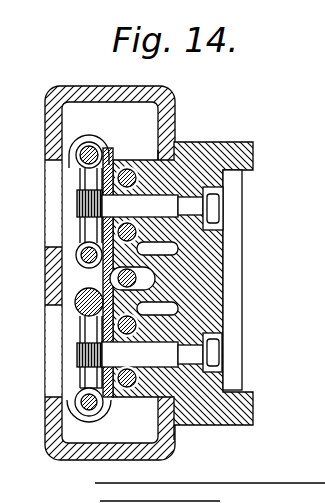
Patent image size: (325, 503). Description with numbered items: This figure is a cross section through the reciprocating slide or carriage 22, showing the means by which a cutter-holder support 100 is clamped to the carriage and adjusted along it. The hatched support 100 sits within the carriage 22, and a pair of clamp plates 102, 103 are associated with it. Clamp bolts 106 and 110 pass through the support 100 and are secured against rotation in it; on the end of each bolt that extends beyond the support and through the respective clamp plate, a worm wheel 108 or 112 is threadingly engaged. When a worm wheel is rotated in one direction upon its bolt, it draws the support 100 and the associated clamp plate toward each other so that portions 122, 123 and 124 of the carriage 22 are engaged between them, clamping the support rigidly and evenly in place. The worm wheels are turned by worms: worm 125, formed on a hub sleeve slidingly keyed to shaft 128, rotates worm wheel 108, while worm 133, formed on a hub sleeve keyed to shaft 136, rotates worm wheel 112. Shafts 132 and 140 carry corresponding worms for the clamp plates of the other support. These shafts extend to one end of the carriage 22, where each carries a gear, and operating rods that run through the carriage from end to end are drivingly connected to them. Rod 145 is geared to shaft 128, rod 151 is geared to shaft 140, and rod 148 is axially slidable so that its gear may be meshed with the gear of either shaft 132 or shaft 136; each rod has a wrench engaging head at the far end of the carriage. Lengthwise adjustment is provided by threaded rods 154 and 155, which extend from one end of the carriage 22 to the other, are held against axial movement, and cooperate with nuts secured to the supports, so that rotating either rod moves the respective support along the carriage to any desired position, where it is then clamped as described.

The reciprocating slide or carriage 22 is at (107, 89).
The support 100 is at (233, 150).
The clamp plate 102 is at (80, 232).
The clamp plate 103 is at (105, 377).
The clamp bolt 106 is at (173, 215).
The worm wheel 108 is at (80, 177).
The clamp bolt 110 is at (173, 364).
The worm wheel 112 is at (86, 327).
The portion of the carriage 122 is at (174, 436).
The portion of the carriage 123 is at (157, 278).
The portion of the carriage 124 is at (162, 146).
The worm 125 is at (86, 143).
The shaft 128 is at (107, 150).
The shaft 132 is at (76, 257).
The worm 133 is at (75, 302).
The shaft 136 is at (82, 306).
The shaft 140 is at (84, 402).
The rod or shaft 145 is at (127, 203).
The rod or shaft 148 is at (110, 281).
The rod or shaft 151 is at (127, 354).
The threaded rod 154 is at (139, 309).
The threaded rod 155 is at (139, 249).